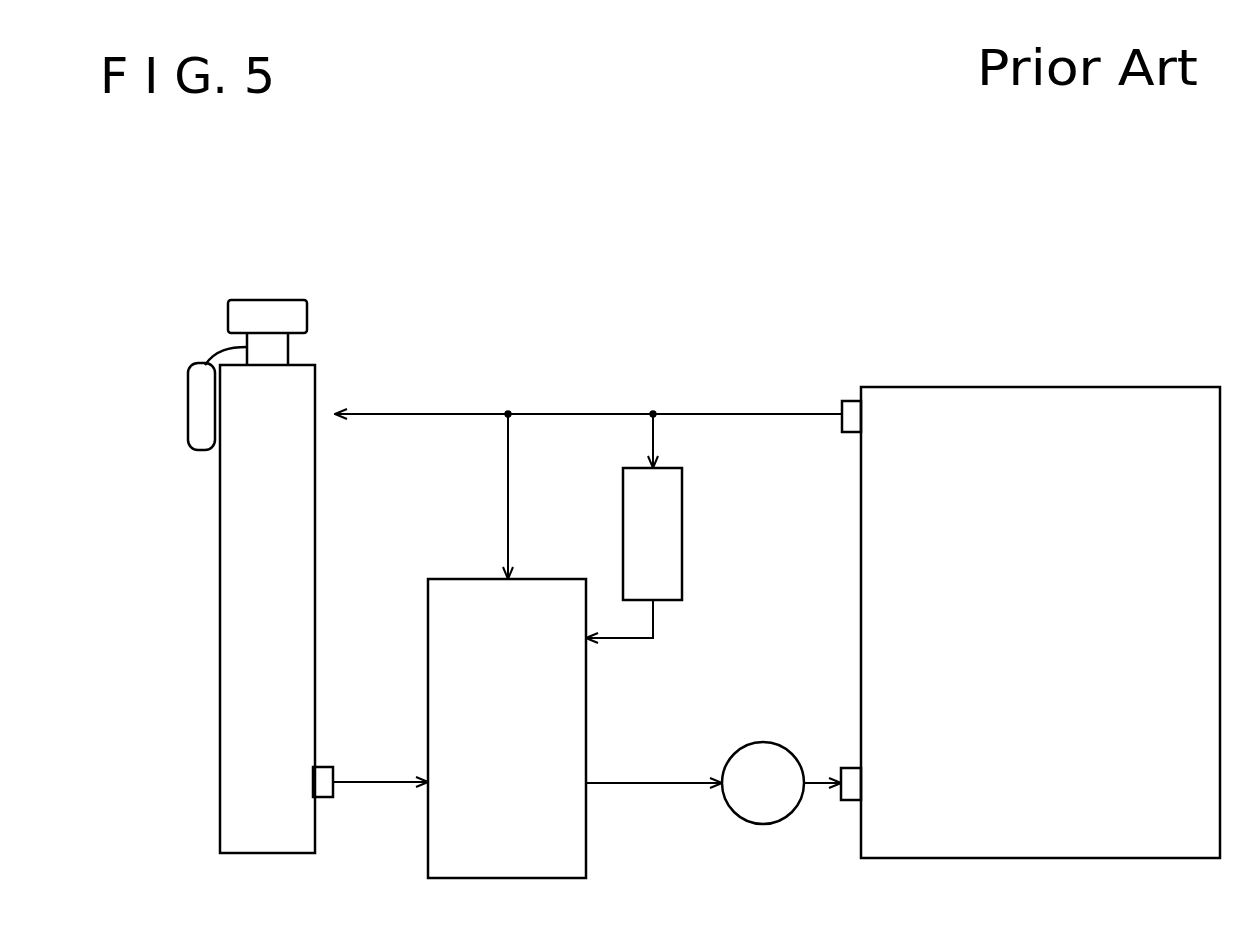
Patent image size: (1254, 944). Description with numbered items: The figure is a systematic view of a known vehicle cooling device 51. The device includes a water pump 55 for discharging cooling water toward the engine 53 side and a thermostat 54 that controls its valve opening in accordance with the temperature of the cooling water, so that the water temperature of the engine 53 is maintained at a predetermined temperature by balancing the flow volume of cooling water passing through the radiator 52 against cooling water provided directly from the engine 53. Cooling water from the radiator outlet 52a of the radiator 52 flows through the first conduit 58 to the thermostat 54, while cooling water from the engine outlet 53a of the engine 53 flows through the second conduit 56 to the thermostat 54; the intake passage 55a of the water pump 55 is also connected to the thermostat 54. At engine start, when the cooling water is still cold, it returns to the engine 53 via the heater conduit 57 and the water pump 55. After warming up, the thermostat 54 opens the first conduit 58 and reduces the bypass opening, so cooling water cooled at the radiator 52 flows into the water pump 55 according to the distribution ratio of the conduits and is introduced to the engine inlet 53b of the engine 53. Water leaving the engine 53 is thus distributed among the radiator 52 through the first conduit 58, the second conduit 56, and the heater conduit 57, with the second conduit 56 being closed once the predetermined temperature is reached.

The vehicle cooling device 51 is at (396, 289).
The radiator 52 is at (220, 568).
The radiator outlet 52a is at (322, 797).
The engine 53 is at (1010, 388).
The engine outlet 53a is at (852, 401).
The engine inlet 53b is at (850, 800).
The thermostat 54 is at (586, 826).
The water pump 55 is at (768, 824).
The intake passage 55a is at (640, 783).
The second conduit 56 is at (508, 522).
The heater conduit 57 is at (653, 440).
The first conduit 58 is at (385, 782).